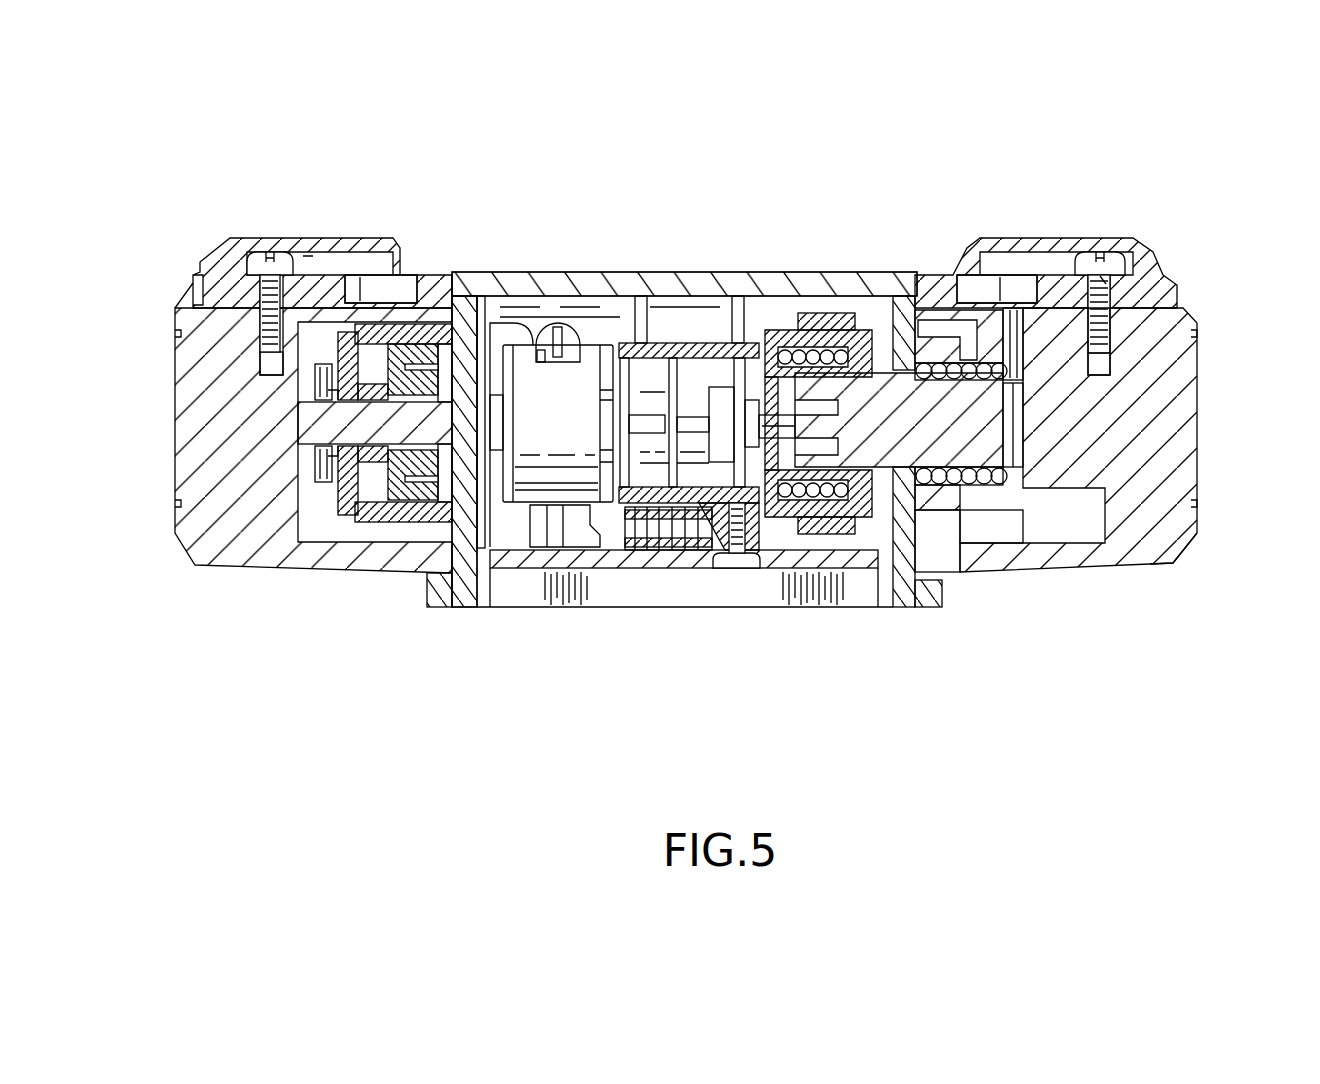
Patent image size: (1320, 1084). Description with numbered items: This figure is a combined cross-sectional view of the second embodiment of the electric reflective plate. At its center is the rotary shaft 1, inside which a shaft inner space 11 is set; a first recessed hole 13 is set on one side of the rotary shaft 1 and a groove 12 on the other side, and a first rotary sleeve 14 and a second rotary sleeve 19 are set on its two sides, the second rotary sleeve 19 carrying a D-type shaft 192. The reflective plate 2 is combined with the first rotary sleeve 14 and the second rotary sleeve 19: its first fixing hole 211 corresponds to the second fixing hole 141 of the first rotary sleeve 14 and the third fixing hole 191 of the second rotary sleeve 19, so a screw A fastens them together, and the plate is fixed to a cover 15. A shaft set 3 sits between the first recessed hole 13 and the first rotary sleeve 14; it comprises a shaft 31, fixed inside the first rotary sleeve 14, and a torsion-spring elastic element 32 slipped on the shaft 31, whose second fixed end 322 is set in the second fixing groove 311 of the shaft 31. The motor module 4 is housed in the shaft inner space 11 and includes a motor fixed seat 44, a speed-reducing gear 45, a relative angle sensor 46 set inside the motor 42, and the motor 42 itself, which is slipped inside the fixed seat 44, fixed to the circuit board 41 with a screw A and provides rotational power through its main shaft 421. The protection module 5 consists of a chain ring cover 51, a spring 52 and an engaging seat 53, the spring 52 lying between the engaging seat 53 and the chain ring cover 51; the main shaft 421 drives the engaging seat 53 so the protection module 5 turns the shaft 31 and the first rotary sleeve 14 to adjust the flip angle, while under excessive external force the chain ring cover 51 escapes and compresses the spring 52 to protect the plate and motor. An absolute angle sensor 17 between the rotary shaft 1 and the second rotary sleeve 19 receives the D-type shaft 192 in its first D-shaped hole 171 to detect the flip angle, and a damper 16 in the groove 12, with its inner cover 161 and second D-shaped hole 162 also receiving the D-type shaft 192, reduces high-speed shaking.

The rotary shaft 1 is at (712, 292).
The shaft inner space 11 is at (683, 300).
The groove 12 is at (462, 300).
The first recessed hole 13 is at (955, 607).
The first rotary sleeve 14 is at (1175, 418).
The second fixing hole 141 is at (1107, 360).
The cover 15 is at (256, 252).
The damper 16 is at (493, 373).
The inner cover 161 is at (410, 510).
The second D-shaped hole 162 is at (395, 345).
The absolute angle sensor 17 is at (358, 432).
The first D-shaped hole 171 is at (324, 395).
The second rotary sleeve 19 is at (193, 427).
The third fixing hole 191 is at (265, 357).
The D-type shaft 192 is at (332, 465).
The reflective plate 2 is at (205, 280).
The first fixing hole 211 is at (232, 256).
The shaft set 3 is at (983, 692).
The shaft 31 is at (1093, 485).
The second fixing groove 311 is at (1173, 563).
The elastic element 32 is at (1028, 452).
The second fixed end 322 is at (990, 428).
The motor module 4 is at (597, 692).
The circuit board 41 is at (600, 560).
The motor 42 is at (525, 500).
The main shaft 421 is at (780, 427).
The motor fixed seat 44 is at (712, 505).
The speed-reducing gear 45 is at (653, 370).
The relative angle sensor 46 is at (588, 365).
The protection module 5 is at (762, 700).
The chain ring cover 51 is at (850, 520).
The spring 52 is at (825, 512).
The engaging seat 53 is at (795, 470).
The screw A is at (308, 256).